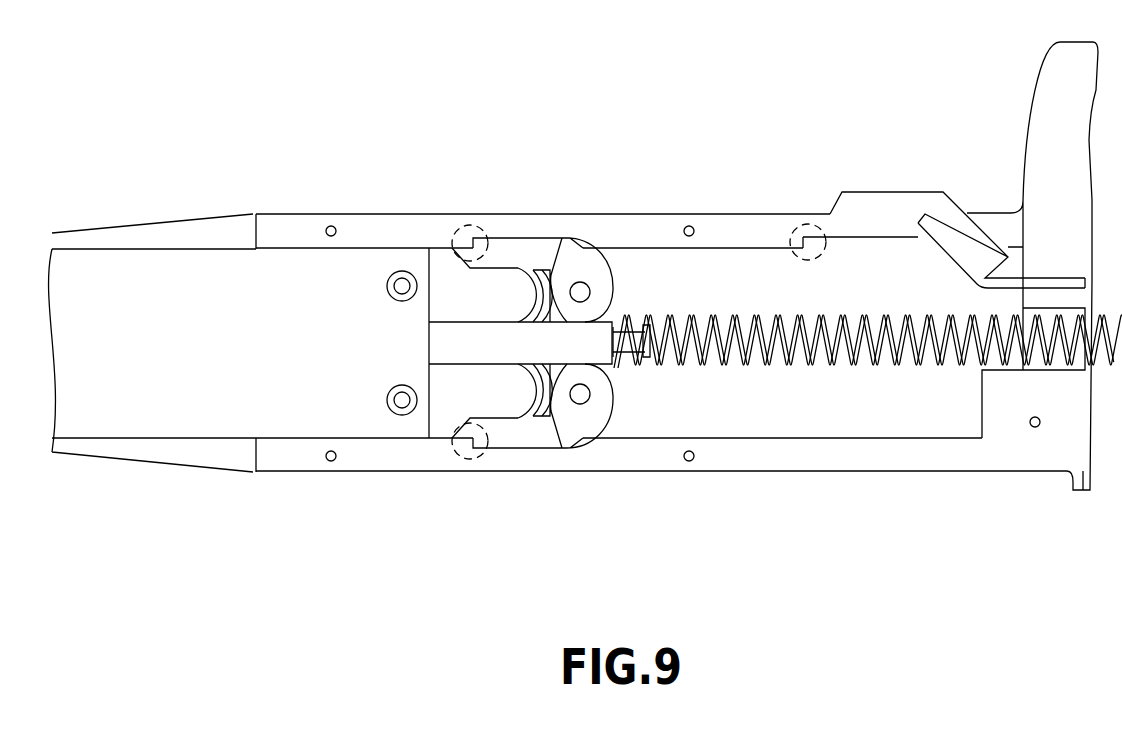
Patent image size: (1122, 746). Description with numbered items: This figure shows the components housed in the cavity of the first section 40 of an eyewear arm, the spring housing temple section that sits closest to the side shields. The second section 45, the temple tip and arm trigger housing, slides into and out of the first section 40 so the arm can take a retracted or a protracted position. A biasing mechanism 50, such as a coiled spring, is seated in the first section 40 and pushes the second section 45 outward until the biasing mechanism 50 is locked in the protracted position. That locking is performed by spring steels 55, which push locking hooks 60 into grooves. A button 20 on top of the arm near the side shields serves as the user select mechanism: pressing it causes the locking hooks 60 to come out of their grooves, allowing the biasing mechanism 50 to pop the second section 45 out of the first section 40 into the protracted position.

The button 20 is at (889, 192).
The first section 40 is at (832, 462).
The second section 45 is at (120, 457).
The biasing mechanism 50 is at (937, 365).
The spring steels 55 is at (528, 410).
The locking hooks 60 is at (795, 230).